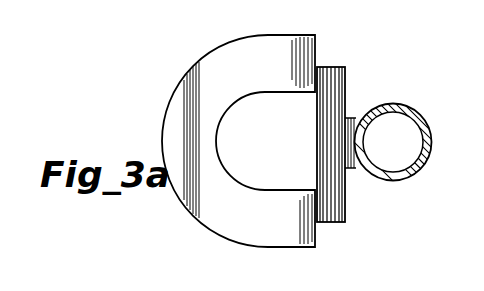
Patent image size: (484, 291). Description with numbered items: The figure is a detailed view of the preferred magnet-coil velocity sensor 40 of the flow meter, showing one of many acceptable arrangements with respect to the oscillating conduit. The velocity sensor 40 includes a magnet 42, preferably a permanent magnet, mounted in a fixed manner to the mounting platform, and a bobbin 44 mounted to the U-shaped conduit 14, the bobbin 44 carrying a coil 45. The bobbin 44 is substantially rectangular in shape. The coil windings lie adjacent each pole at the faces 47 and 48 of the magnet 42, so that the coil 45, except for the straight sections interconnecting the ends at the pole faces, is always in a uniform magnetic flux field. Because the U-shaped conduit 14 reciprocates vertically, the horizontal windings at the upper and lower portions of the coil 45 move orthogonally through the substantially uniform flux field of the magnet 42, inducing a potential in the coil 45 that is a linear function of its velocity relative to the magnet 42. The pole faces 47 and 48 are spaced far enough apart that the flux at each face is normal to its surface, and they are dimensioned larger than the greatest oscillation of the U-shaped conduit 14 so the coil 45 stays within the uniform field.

The velocity sensor 40 is at (250, 144).
The magnet 42 is at (165, 97).
The pole face 47 is at (318, 46).
The pole face 48 is at (316, 247).
The coil 45 is at (333, 66).
The bobbin 44 is at (346, 84).
The U-shaped conduit 14 is at (405, 179).